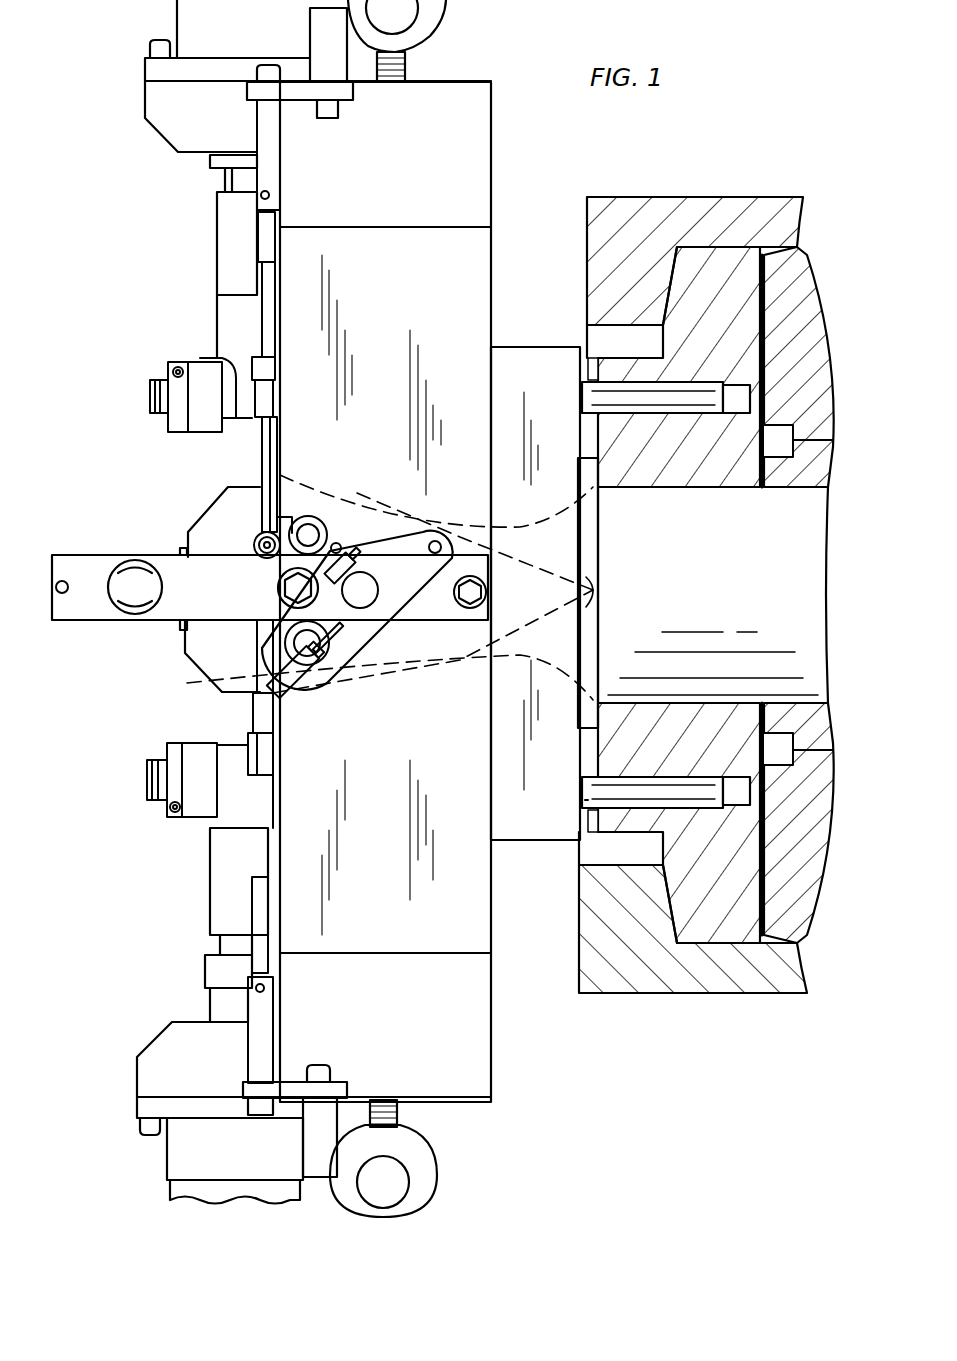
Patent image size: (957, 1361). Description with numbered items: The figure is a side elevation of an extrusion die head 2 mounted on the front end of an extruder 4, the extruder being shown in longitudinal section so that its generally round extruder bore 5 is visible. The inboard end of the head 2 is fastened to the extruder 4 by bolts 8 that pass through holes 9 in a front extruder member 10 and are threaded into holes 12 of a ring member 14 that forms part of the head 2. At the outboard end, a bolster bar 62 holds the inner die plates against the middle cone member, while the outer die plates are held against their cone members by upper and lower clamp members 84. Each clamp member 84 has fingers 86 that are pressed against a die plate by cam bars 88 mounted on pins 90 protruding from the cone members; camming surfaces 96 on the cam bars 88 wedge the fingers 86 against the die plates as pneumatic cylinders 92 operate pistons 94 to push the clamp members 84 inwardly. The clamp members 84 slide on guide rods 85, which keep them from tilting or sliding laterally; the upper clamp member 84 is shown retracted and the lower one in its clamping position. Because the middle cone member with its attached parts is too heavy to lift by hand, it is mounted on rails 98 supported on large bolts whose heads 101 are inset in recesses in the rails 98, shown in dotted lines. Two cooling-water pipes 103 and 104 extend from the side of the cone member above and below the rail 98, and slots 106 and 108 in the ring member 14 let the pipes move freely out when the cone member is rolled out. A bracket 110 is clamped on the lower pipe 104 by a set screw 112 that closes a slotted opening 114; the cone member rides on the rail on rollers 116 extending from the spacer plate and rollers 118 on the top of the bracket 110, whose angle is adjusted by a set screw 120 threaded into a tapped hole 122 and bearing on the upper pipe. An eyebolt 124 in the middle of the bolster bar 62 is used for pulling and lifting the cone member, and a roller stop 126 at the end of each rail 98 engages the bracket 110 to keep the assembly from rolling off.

The extrusion die head 2 is at (447, 68).
The extruder 4 is at (695, 195).
The extruder bore 5 is at (713, 627).
The bolts 8 is at (590, 385).
The holes 9 is at (600, 385).
The front extruder member 10 is at (672, 245).
The holes 12 is at (585, 800).
The ring member 14 is at (498, 345).
The bolster bar 62 is at (237, 490).
The clamp members 84 is at (230, 236).
The guide rods 85 is at (252, 250).
The fingers 86 is at (248, 415).
The cam bars 88 is at (200, 362).
The pins 90 is at (150, 390).
The pneumatic cylinders 92 is at (188, 22).
The pistons 94 is at (235, 182).
The camming surfaces 96 is at (225, 360).
The rails 98 is at (183, 628).
The heads 101 is at (490, 588).
The pipe 103 is at (300, 520).
The pipe 104 is at (325, 655).
The slot 106 is at (285, 530).
The slot 108 is at (210, 678).
The bracket 110 is at (385, 640).
The set screw 112 is at (315, 700).
The slotted opening 114 is at (340, 650).
The rollers 116 is at (258, 540).
The rollers 118 is at (448, 540).
The set screw 120 is at (338, 545).
The tapped hole 122 is at (346, 568).
The eyebolt 124 is at (147, 558).
The roller stop 126 is at (64, 580).